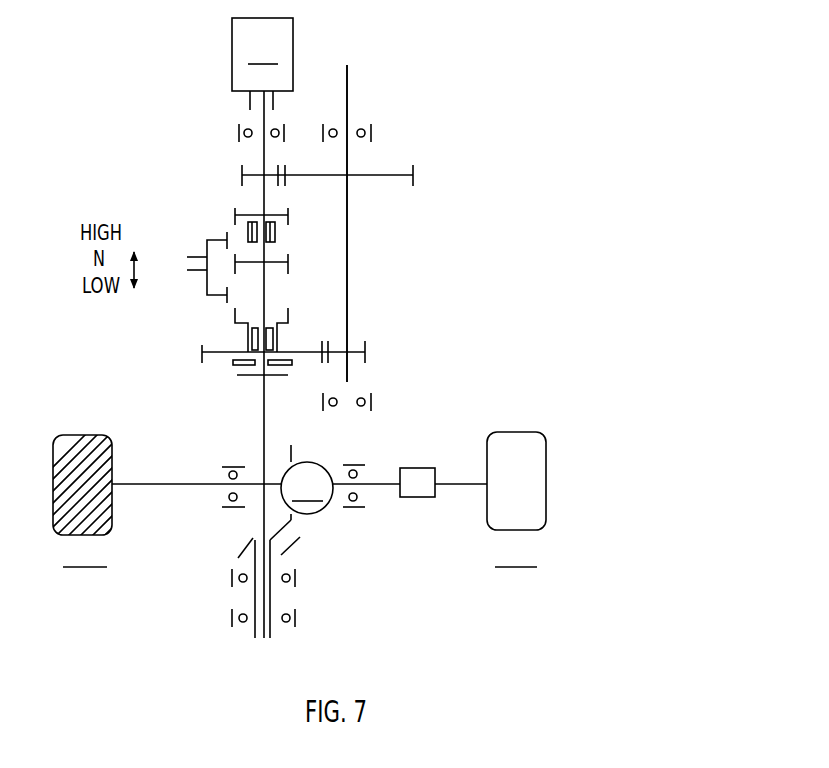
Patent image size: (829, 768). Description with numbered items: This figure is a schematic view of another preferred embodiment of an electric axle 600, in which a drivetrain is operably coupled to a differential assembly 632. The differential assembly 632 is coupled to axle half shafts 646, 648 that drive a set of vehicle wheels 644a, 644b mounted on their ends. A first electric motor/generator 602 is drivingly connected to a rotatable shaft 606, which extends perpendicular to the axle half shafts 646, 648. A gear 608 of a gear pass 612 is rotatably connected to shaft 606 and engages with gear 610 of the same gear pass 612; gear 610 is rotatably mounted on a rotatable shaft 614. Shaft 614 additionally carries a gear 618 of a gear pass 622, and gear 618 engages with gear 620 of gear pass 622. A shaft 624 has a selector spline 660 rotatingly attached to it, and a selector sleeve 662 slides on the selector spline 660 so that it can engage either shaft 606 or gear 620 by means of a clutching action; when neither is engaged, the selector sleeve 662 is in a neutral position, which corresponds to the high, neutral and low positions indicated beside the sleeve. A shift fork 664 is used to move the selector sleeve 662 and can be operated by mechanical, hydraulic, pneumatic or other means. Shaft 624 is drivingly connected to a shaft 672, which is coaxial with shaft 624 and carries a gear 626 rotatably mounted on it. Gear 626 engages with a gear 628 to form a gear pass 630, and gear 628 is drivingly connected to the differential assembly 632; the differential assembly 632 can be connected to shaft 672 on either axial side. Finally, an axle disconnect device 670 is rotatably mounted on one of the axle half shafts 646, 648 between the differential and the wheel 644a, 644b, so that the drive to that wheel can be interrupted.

The electric axle 600 is at (540, 66).
The first electric motor/generator 602 is at (262, 64).
The rotatable shaft 606 is at (258, 201).
The gear 608 is at (240, 177).
The gear 610 is at (399, 175).
The gear pass 612 is at (482, 146).
The rotatable shaft 614 is at (351, 307).
The gear 618 is at (372, 346).
The gear 620 is at (203, 346).
The gear pass 622 is at (414, 369).
The shaft 624 is at (260, 406).
The gear 626 is at (250, 542).
The gear 628 is at (283, 456).
The gear pass 630 is at (308, 553).
The differential assembly 632 is at (307, 488).
The vehicle wheel 644a is at (122, 493).
The vehicle wheel 644b is at (536, 492).
The axle half shaft 646 is at (122, 485).
The axle half shaft 648 is at (458, 483).
The selector spline 660 is at (296, 261).
The selector sleeve 662 is at (202, 239).
The shift fork 664 is at (170, 268).
The axle disconnect device 670 is at (433, 497).
The shaft 672 is at (282, 645).